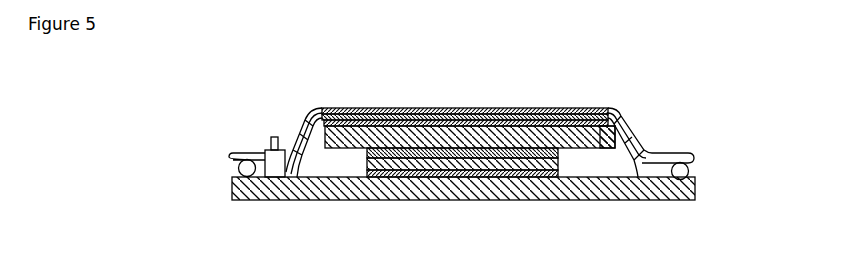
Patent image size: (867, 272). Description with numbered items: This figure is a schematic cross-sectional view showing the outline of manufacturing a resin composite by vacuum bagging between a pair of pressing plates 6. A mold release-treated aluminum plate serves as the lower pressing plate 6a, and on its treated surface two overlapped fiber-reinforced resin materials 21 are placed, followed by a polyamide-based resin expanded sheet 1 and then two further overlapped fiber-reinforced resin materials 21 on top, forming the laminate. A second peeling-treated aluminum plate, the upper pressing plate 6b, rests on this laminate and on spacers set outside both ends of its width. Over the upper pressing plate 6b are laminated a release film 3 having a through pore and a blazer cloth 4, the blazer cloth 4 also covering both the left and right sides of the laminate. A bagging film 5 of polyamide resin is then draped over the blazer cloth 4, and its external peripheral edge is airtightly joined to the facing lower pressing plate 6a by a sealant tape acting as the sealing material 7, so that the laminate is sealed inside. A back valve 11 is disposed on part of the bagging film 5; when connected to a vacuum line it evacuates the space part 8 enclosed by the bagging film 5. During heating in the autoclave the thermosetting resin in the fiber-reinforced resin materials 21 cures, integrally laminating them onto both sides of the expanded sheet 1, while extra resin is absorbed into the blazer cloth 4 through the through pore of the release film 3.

The polyamide-based resin expanded sheet 1 is at (423, 163).
The release film 3 is at (412, 108).
The blazer cloth 4 is at (447, 115).
The bagging film 5 is at (481, 121).
The pressing plate 6 is at (612, 136).
The pressing plate 6a is at (503, 186).
The pressing plate 6b is at (515, 134).
The sealing material 7 is at (239, 169).
The space part 8 is at (649, 151).
The back valve 11 is at (270, 140).
The fiber-reinforced resin material 21 is at (404, 172).